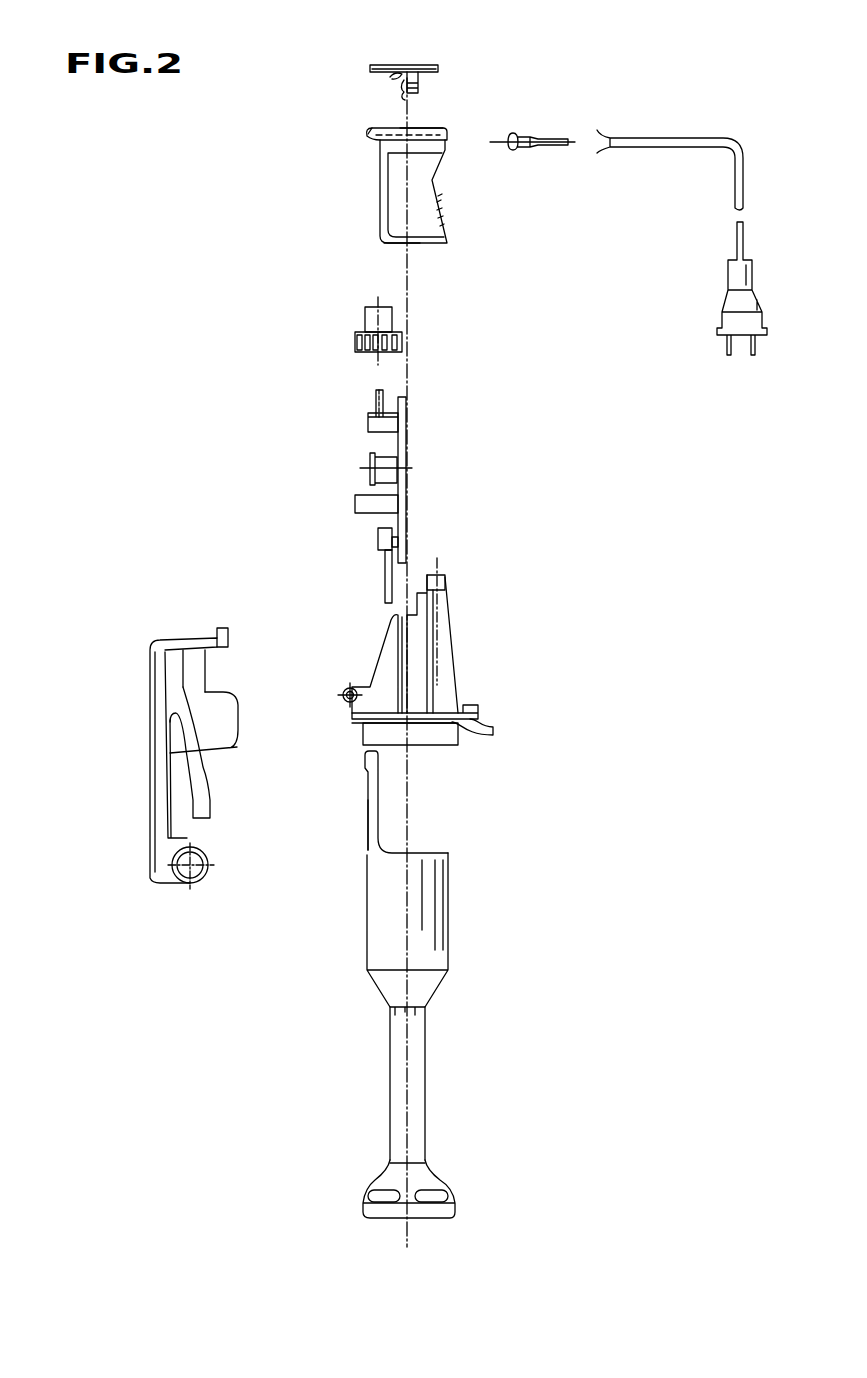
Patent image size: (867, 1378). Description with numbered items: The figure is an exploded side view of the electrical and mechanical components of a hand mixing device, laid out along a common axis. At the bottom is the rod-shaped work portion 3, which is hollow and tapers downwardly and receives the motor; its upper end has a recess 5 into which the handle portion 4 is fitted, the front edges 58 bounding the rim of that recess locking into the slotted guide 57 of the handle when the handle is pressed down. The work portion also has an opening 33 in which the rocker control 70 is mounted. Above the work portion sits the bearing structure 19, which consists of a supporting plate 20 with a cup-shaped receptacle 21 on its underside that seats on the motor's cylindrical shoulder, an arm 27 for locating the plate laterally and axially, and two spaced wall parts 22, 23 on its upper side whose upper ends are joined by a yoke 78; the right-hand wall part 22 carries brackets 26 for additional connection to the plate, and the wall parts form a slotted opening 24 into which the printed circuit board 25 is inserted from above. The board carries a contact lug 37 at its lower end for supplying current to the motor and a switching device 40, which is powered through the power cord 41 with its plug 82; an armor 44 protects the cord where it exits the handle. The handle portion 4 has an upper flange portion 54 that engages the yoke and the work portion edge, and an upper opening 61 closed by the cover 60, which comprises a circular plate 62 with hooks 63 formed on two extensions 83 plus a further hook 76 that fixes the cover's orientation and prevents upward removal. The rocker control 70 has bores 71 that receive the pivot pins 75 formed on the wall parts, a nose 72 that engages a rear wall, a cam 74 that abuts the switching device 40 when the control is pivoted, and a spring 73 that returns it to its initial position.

The work portion 3 is at (368, 916).
The handle portion 4 is at (398, 187).
The recess 5 is at (378, 984).
The bearing structure 19 is at (427, 655).
The supporting plate 20 is at (458, 725).
The cup-shaped receptacle 21 is at (438, 735).
The wall part 22 is at (455, 657).
The wall part 23 is at (380, 645).
The slotted opening 24 is at (400, 656).
The printed circuit board 25 is at (410, 480).
The brackets 26 is at (438, 630).
The arm 27 is at (490, 719).
The opening 33 is at (368, 808).
The contact lug 37 is at (385, 577).
The switching device 40 is at (373, 468).
The power cord 41 is at (738, 172).
The armor 44 is at (532, 162).
The upper flange portion 54 is at (373, 131).
The slotted guide 57 is at (386, 244).
The front edges 58 is at (384, 812).
The cover 60 is at (396, 62).
The upper opening 61 is at (432, 127).
The circular plate 62 is at (413, 64).
The hooks 63 is at (420, 86).
The rocker control 70 is at (164, 758).
The bores 71 is at (196, 873).
The nose 72 is at (228, 640).
The spring 73 is at (204, 790).
The cam 74 is at (222, 738).
The pivot pins 75 is at (344, 706).
The hook 76 is at (390, 76).
The yoke 78 is at (440, 580).
The plug 82 is at (740, 305).
The extensions 83 is at (404, 95).